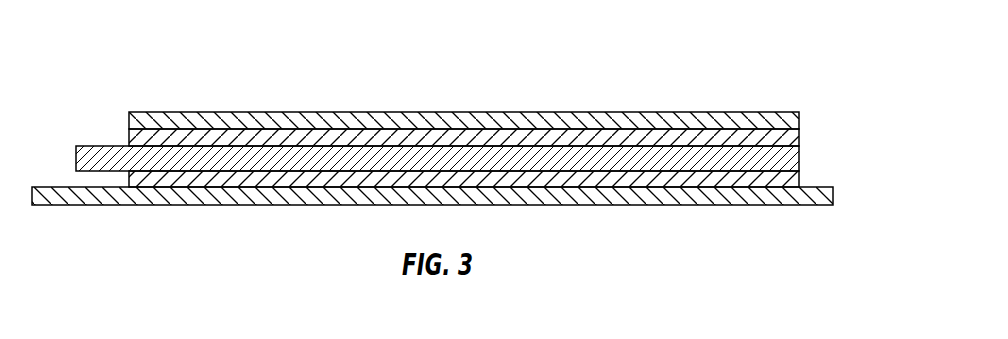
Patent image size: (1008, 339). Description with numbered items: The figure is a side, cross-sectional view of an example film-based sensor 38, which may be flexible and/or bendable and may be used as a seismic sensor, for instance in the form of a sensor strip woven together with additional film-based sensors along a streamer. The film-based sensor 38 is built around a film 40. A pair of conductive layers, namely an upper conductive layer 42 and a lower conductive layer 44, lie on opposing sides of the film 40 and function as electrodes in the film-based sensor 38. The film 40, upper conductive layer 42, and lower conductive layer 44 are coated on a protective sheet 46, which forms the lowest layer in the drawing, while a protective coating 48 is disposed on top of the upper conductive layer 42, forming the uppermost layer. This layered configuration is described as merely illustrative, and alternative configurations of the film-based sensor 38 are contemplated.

The film-based sensor 38 is at (742, 70).
The protective coating 48 is at (799, 120).
The upper conductive layer 42 is at (799, 137).
The film 40 is at (799, 158).
The lower conductive layer 44 is at (799, 179).
The protective sheet 46 is at (833, 196).